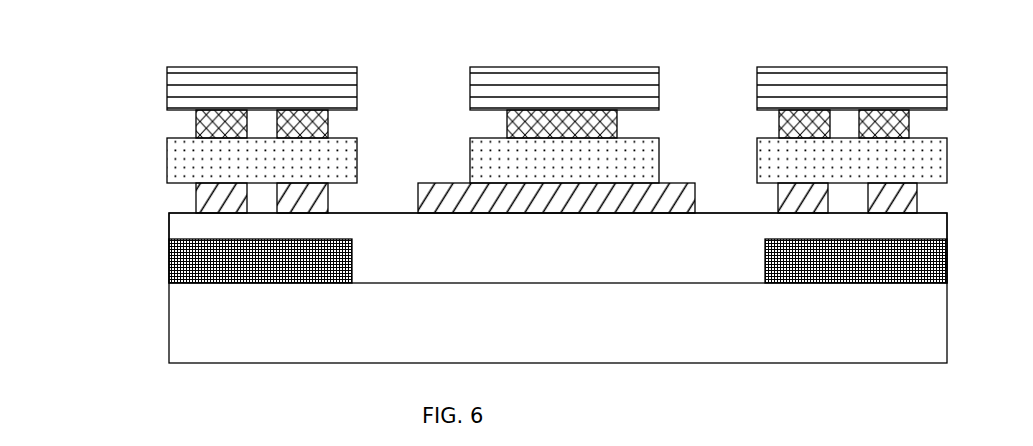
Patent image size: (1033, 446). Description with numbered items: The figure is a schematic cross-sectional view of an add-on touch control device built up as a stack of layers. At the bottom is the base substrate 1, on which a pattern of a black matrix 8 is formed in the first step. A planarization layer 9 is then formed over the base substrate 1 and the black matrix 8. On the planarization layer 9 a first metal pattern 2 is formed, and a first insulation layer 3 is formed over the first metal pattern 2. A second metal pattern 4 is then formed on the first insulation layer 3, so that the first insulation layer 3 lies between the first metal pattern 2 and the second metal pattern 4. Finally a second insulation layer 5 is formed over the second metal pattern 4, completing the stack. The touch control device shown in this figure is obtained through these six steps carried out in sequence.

The base substrate 1 is at (169, 297).
The first metal pattern 2 is at (197, 193).
The first insulation layer 3 is at (178, 152).
The second metal pattern 4 is at (195, 122).
The second insulation layer 5 is at (183, 75).
The black matrix 8 is at (193, 262).
The planarization layer 9 is at (202, 222).